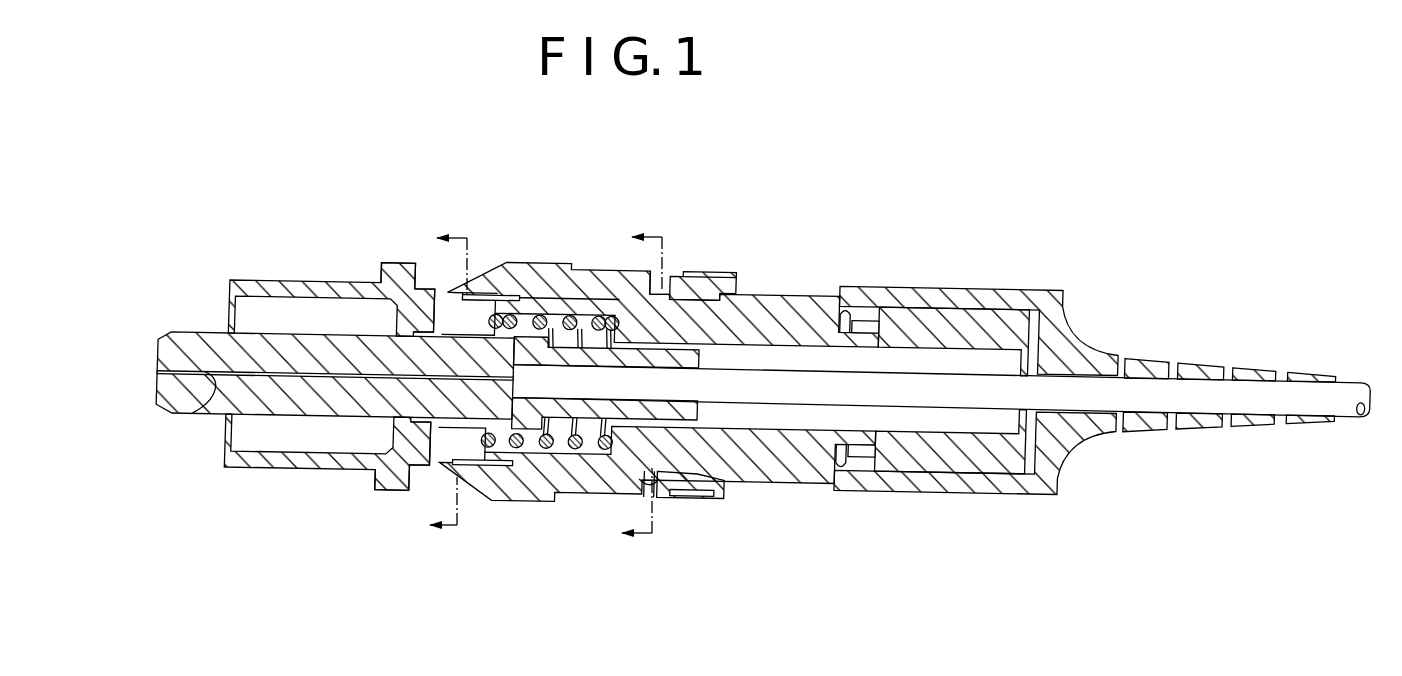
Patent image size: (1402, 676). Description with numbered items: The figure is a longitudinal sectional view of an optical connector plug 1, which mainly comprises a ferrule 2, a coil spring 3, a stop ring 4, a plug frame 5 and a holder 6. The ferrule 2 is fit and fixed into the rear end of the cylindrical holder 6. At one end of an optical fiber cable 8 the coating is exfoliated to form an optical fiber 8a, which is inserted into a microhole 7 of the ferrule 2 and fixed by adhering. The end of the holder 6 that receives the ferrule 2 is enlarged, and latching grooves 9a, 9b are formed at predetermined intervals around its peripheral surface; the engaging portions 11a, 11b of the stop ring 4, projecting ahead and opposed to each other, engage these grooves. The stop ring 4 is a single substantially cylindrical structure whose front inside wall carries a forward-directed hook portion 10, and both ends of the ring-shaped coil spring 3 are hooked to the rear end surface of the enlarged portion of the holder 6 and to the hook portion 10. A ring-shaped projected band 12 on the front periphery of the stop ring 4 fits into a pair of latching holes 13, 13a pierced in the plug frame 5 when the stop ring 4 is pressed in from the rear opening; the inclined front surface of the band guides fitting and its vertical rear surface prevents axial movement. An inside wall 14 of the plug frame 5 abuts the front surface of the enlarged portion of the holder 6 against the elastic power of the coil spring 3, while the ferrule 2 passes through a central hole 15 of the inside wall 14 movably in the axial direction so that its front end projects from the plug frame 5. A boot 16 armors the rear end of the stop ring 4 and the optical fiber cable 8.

The optical connector plug 1 is at (928, 242).
The ferrule 2 is at (182, 330).
The coil spring 3 is at (568, 486).
The stop ring 4 is at (797, 481).
The plug frame 5 is at (305, 274).
The holder 6 is at (620, 322).
The microhole 7 is at (157, 372).
The optical fiber cable 8 is at (1196, 383).
The optical fiber 8a is at (193, 410).
The latching groove 9a is at (510, 293).
The latching groove 9b is at (525, 460).
The hook portion 10 is at (703, 290).
The upper key plate 11a is at (478, 293).
The lower key plate 11b is at (488, 462).
The projected band 12 is at (664, 498).
The latching hole 13 is at (668, 285).
The latching hole 13a is at (658, 500).
The inside wall 14 is at (417, 318).
The central hole 15 is at (395, 404).
The boot 16 is at (1045, 288).